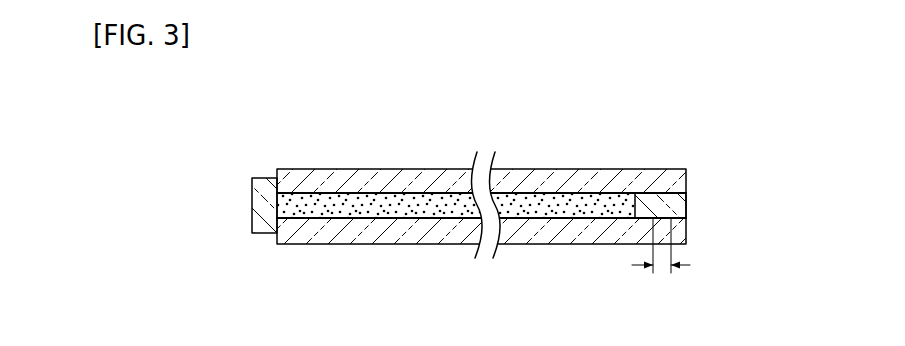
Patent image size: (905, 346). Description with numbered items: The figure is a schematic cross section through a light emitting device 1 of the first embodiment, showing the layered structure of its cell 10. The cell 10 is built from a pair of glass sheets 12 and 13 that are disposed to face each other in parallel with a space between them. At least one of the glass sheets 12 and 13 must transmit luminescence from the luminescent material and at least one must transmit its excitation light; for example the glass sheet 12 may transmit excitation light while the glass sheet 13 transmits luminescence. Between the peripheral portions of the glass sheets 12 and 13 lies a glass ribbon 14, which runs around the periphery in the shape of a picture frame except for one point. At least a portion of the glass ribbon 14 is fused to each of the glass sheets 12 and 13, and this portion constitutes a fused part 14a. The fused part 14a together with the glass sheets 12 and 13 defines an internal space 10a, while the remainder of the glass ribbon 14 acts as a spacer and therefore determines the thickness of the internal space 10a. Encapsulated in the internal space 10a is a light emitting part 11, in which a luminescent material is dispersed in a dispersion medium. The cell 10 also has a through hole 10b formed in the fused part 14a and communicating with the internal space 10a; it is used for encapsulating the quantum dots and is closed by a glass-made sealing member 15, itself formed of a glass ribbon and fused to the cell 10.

The light emitting device 1 is at (678, 128).
The cell 10 is at (578, 169).
The internal space 10a is at (386, 198).
The through hole 10b is at (292, 214).
The light emitting part 11 is at (575, 219).
The glass sheet 12 is at (522, 169).
The glass sheet 13 is at (520, 244).
The glass ribbon 14 is at (686, 204).
The fused part 14a is at (662, 266).
The sealing member 15 is at (252, 204).